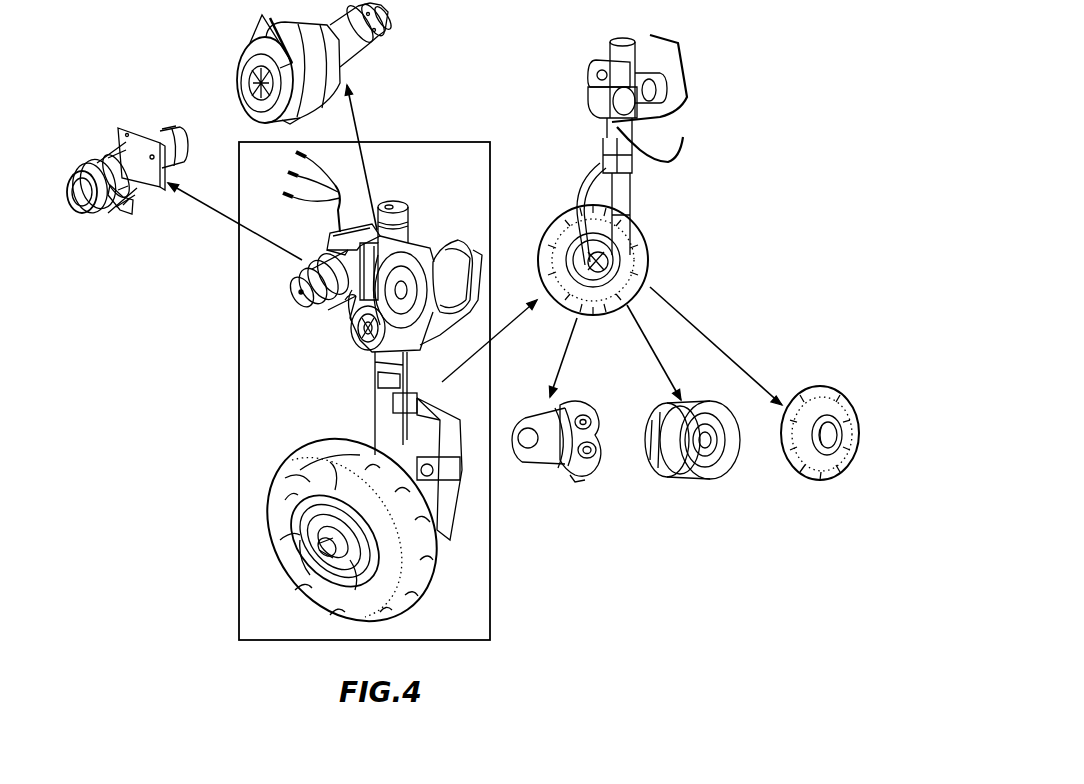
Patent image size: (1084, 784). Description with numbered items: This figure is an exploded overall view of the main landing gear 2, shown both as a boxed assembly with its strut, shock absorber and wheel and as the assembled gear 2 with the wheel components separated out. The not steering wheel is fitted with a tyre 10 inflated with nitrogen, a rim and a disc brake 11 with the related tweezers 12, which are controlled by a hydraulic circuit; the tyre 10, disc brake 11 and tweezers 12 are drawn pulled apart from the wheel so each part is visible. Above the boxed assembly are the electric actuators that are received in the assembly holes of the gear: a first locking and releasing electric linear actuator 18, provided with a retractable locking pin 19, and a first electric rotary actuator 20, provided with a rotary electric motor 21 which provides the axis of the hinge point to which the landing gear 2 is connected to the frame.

The landing gear 2 is at (300, 388).
The tyre 10 is at (832, 487).
The disc brake 11 is at (699, 483).
The tweezers 12 is at (550, 477).
The first locking and releasing electric linear actuator 18 is at (103, 147).
The retractable locking pin 19 is at (180, 127).
The first electric rotary actuator 20 is at (233, 40).
The rotary electric motor 21 is at (383, 33).